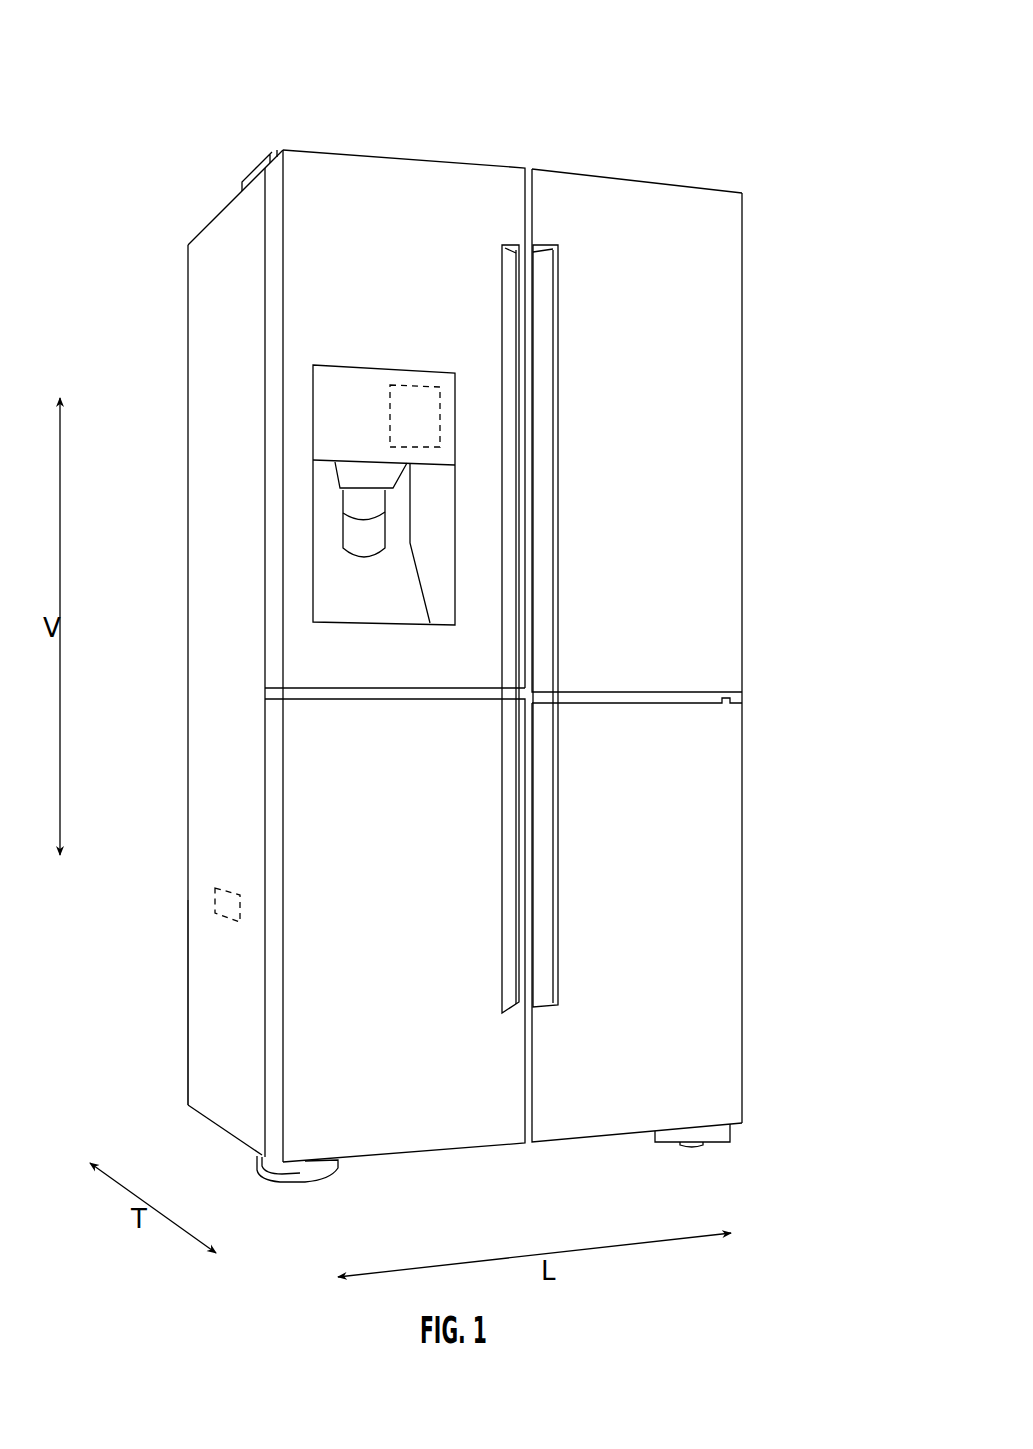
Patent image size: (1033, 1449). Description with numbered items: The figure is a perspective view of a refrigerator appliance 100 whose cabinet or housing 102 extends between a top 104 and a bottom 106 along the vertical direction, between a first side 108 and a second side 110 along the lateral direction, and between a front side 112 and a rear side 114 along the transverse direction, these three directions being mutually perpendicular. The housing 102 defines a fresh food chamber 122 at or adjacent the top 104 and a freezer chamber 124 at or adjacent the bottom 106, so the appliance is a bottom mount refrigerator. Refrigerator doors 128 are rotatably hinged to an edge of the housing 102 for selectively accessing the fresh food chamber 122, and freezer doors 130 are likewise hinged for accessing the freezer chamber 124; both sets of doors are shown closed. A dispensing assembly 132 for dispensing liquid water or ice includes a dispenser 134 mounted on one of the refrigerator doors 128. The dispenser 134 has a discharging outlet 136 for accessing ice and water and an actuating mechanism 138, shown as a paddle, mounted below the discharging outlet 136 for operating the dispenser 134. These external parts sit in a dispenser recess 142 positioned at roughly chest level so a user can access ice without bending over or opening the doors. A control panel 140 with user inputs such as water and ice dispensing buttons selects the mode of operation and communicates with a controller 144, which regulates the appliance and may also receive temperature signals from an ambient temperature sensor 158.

The refrigerator appliance 100 is at (482, 618).
The housing 102 is at (183, 382).
The top 104 is at (205, 212).
The bottom 106 is at (208, 1125).
The first side 108 is at (212, 1037).
The second side 110 is at (743, 1027).
The front side 112 is at (380, 188).
The rear side 114 is at (178, 282).
The fresh food chamber 122 is at (551, 541).
The freezer chamber 124 is at (551, 959).
The refrigerator doors 128 is at (465, 185).
The freezer doors 130 is at (418, 1127).
The dispensing assembly 132 is at (340, 364).
The dispenser 134 is at (352, 475).
The discharging outlet 136 is at (360, 511).
The actuating mechanism 138 is at (358, 540).
The control panel 140 is at (360, 386).
The dispenser recess 142 is at (358, 605).
The controller 144 is at (443, 398).
The ambient temperature sensor 158 is at (215, 893).